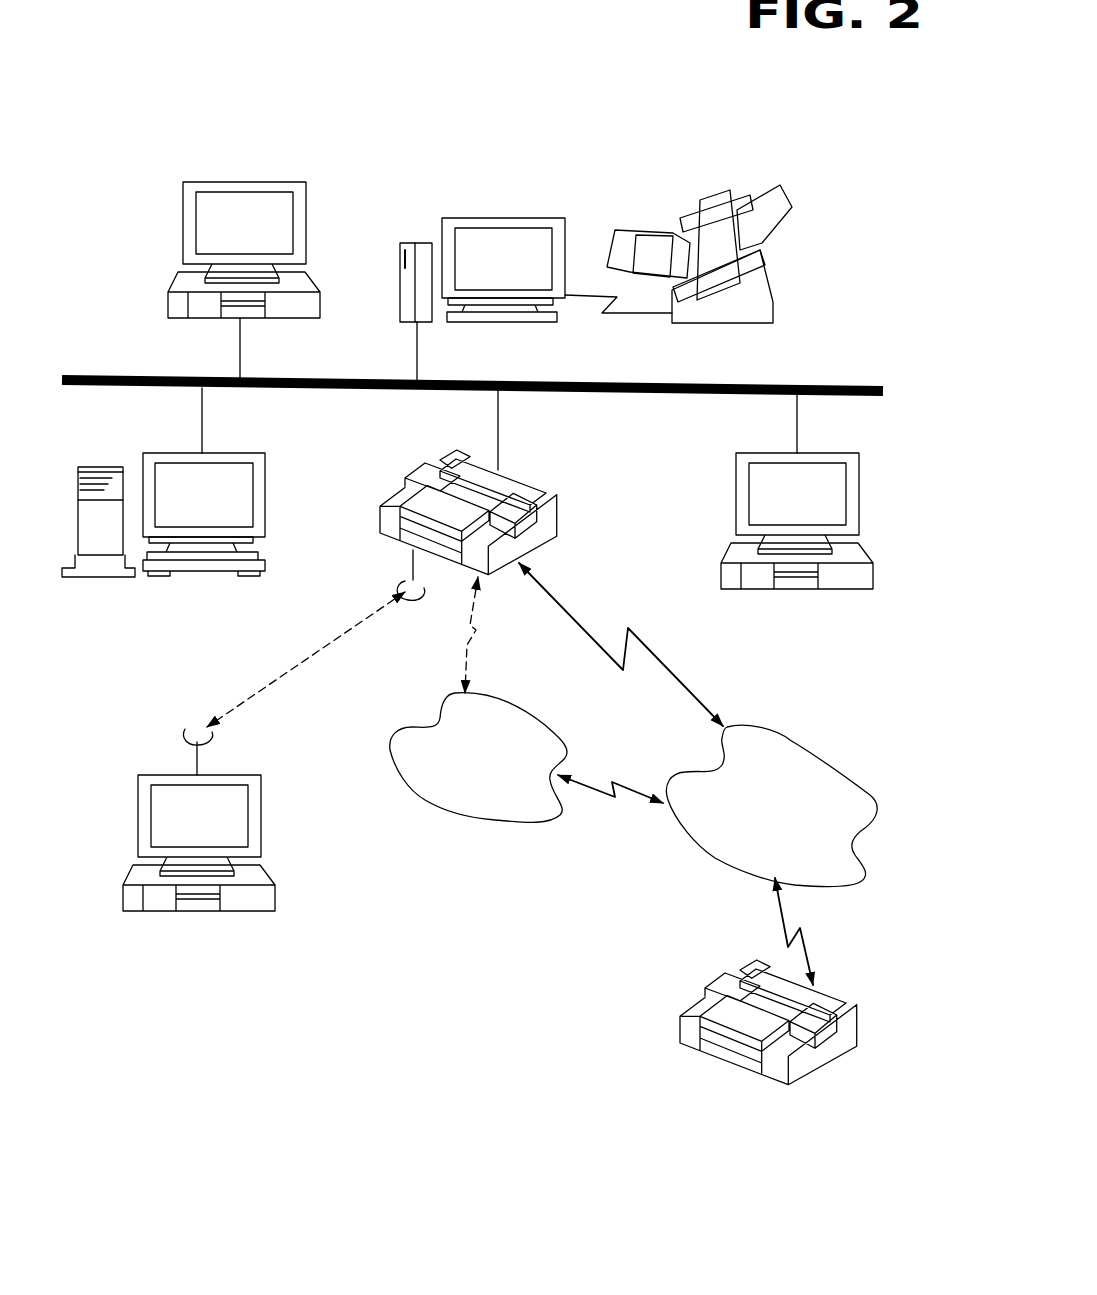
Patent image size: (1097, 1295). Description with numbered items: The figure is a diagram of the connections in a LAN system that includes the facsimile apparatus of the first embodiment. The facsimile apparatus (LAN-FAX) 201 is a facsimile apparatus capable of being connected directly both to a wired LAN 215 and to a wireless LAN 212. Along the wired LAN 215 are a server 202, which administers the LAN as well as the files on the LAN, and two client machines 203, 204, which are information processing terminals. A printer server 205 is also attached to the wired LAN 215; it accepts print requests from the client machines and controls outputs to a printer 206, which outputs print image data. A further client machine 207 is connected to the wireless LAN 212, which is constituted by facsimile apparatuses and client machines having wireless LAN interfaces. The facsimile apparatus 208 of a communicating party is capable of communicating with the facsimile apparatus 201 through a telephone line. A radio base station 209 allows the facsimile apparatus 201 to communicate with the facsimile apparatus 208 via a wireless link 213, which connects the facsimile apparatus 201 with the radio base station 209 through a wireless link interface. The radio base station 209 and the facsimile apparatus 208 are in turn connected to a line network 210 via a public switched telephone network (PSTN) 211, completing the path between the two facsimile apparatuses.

The facsimile apparatus (LAN-FAX) 201 is at (580, 457).
The server 202 is at (187, 576).
The client machine WS-1 203 is at (205, 181).
The client machine WS-2 204 is at (737, 588).
The printer server 205 is at (473, 215).
The printer 206 is at (717, 195).
The client machine WS-3 207 is at (160, 908).
The facsimile apparatus of a communicating party 208 is at (732, 1060).
The radio base station 209 is at (430, 800).
The line network 210 is at (800, 738).
The public switched telephone network (PSTN) 211 is at (660, 653).
The wireless LAN 212 is at (270, 683).
The wireless link 213 is at (470, 660).
The wired LAN 215 is at (625, 383).